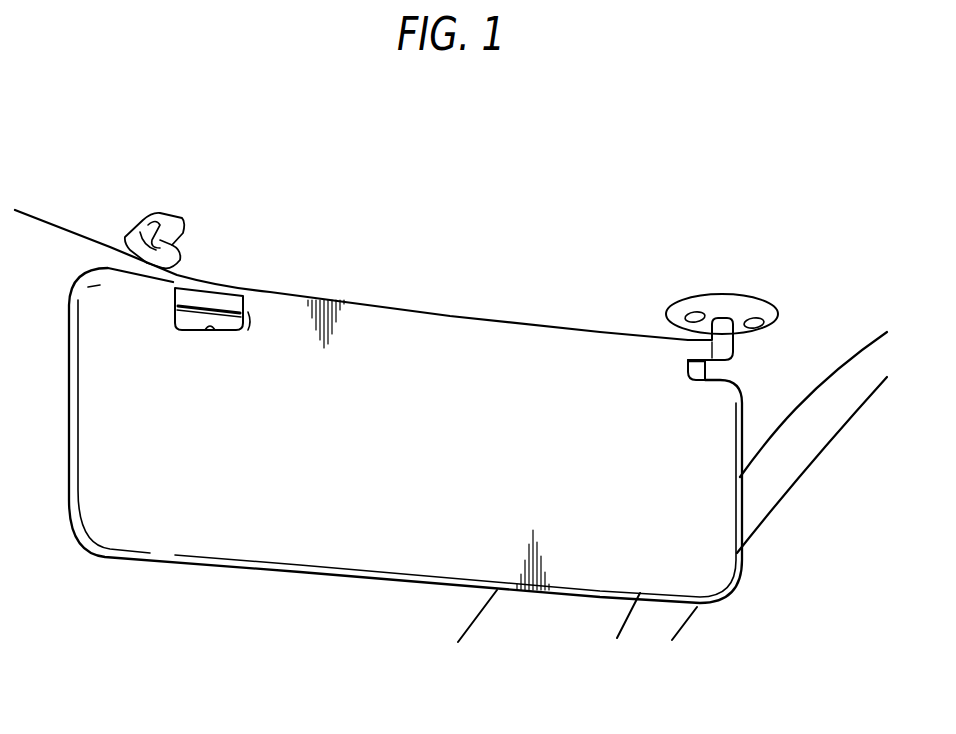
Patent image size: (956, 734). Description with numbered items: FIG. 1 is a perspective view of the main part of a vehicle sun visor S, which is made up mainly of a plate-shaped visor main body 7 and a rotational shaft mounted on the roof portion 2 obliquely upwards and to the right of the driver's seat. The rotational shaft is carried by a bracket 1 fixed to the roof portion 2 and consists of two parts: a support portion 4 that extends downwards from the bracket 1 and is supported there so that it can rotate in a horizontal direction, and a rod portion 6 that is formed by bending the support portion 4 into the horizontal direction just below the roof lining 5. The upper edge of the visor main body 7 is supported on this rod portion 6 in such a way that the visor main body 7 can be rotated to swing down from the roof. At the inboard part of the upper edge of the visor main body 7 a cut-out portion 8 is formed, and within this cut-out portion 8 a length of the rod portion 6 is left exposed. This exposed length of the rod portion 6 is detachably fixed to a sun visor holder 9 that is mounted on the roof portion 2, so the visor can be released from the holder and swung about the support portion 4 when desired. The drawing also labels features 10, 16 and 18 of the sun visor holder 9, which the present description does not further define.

The bracket 1 is at (735, 306).
The roof portion 2 is at (604, 254).
The support portion 4 is at (737, 342).
The roof lining 5 is at (440, 280).
The rod portion 6 is at (229, 299).
The visor main body 7 is at (86, 427).
The cut-out portion 8 is at (211, 328).
The sun visor holder 9 is at (150, 205).
The clip body 10 is at (176, 222).
The clip hook 16 is at (152, 244).
The clip arm 18 is at (170, 242).
The sun visor S is at (412, 215).